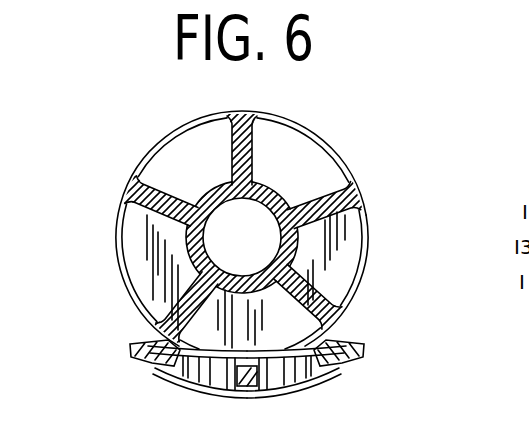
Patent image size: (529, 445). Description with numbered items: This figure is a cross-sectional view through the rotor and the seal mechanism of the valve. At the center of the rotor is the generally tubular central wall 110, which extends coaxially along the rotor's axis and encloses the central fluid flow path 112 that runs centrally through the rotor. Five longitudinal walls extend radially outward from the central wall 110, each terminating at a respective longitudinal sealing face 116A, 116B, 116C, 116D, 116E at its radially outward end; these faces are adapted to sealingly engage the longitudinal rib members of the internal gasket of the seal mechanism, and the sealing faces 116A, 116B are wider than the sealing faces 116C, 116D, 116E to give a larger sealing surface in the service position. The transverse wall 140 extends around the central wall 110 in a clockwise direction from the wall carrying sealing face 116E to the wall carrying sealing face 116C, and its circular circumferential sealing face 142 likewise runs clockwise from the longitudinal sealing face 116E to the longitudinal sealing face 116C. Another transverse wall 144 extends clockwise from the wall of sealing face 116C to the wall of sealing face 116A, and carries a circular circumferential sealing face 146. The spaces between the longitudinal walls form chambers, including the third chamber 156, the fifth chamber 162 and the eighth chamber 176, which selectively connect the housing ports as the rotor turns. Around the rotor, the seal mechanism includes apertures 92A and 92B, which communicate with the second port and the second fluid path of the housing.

The aperture 92A is at (217, 374).
The aperture 92B is at (282, 377).
The tubular central wall 110 is at (257, 183).
The central fluid flow path 112 is at (253, 230).
The longitudinal sealing face 116A is at (337, 320).
The longitudinal sealing face 116B is at (163, 336).
The longitudinal sealing face 116C is at (127, 193).
The longitudinal sealing face 116D is at (252, 113).
The longitudinal sealing face 116E is at (358, 199).
The transverse wall 140 is at (350, 233).
The circular circumferential sealing face 142 is at (366, 265).
The transverse wall 144 is at (162, 168).
The circular circumferential sealing face 146 is at (173, 130).
The third chamber 156 is at (143, 263).
The fifth chamber 162 is at (216, 133).
The eighth chamber 176 is at (307, 143).